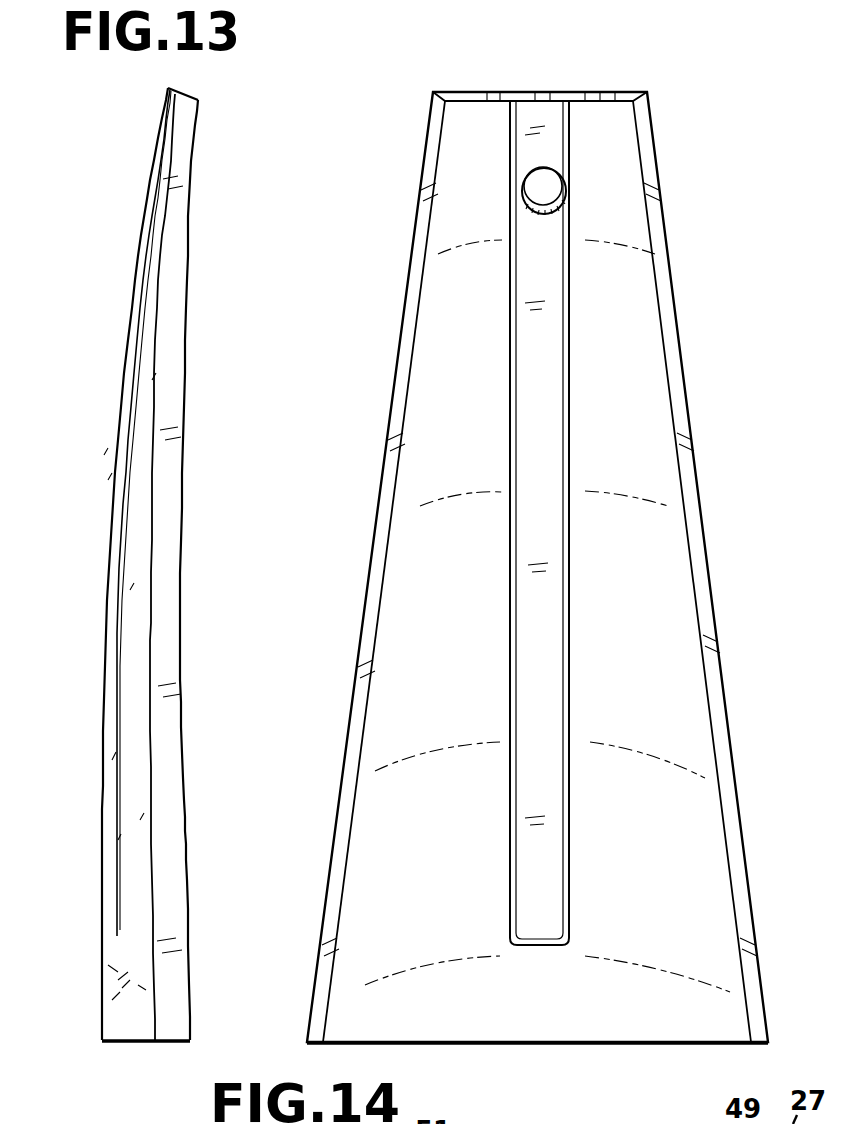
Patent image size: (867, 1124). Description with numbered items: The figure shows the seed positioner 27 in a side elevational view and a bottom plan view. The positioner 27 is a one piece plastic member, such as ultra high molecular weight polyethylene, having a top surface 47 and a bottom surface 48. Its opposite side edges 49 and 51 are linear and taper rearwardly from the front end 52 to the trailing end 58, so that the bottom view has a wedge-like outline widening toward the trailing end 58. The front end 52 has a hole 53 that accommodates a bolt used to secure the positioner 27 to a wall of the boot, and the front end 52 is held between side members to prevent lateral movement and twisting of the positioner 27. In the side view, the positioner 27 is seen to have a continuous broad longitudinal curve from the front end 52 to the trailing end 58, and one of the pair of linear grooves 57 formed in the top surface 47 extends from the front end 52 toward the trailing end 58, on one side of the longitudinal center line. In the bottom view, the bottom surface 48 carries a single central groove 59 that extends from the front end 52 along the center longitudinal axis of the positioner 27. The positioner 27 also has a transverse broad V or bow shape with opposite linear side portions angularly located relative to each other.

In FIG. 13, the positioner 27 is at (218, 214).
In FIG. 14, the positioner 27 is at (700, 220).
In FIG. 13, the top surface 47 is at (118, 983).
In FIG. 14, the bottom surface 48 is at (638, 672).
In FIG. 14, the side edge 49 is at (690, 525).
In FIG. 13, the side edge 51 is at (165, 658).
In FIG. 14, the side edge 51 is at (378, 557).
In FIG. 13, the front end 52 is at (180, 118).
In FIG. 14, the front end 52 is at (472, 117).
In FIG. 14, the hole 53 is at (545, 176).
In FIG. 13, the groove 57 is at (122, 660).
In FIG. 13, the trailing end 58 is at (135, 1042).
In FIG. 14, the trailing end 58 is at (538, 1043).
In FIG. 14, the central groove 59 is at (548, 378).